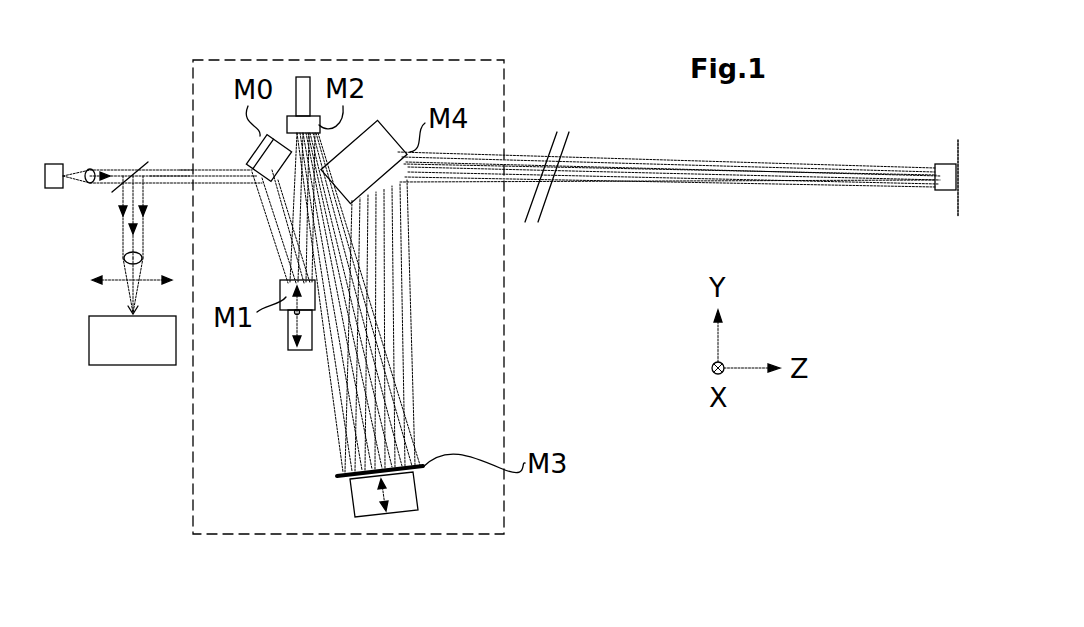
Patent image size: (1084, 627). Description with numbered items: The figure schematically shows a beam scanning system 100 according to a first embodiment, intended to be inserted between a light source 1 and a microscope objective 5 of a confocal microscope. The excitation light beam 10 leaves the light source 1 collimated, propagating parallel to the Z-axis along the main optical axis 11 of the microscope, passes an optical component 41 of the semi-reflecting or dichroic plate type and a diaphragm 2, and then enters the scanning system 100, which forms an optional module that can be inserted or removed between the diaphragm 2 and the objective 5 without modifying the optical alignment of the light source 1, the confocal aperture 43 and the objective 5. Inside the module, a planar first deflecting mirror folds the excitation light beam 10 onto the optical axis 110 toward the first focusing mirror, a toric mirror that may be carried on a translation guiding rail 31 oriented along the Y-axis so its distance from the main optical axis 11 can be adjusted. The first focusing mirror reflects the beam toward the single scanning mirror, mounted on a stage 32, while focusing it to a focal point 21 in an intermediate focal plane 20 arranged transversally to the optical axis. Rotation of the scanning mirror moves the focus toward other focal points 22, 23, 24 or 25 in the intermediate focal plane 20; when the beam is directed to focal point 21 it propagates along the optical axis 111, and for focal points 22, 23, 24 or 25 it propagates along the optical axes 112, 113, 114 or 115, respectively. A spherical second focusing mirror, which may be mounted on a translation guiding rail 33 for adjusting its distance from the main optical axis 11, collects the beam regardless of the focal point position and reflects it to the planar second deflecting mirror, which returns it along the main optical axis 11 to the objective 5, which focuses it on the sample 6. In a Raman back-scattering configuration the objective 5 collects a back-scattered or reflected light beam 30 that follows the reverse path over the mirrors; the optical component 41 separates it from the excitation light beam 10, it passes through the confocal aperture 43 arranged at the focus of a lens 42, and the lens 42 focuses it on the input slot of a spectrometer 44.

The light source 1 is at (55, 163).
The excitation light beam 10 is at (90, 169).
The optical component 41 is at (141, 163).
The main optical axis 11 is at (163, 171).
The diaphragm 2 is at (180, 169).
The back-scattered or reflected light beam 30 is at (124, 258).
The lens 42 is at (168, 279).
The confocal aperture 43 is at (133, 314).
The spectrometer 44 is at (108, 366).
The stage 32 is at (301, 76).
The optical axis 110 is at (270, 205).
The intermediate focal plane 20 is at (335, 230).
The focal point 21 is at (345, 280).
The focal point 22 is at (340, 262).
The focal point 23 is at (340, 248).
The focal point 24 is at (335, 238).
The focal point 25 is at (337, 228).
The translation guiding rail 31 is at (290, 337).
The optical axis 111 is at (347, 333).
The optical axis 112 is at (345, 297).
The optical axis 113 is at (362, 297).
The optical axis 114 is at (342, 380).
The optical axis 115 is at (340, 448).
The translation guiding rail 33 is at (420, 495).
The beam scanning system 100 is at (503, 372).
The microscope objective 5 is at (948, 168).
The sample 6 is at (958, 203).